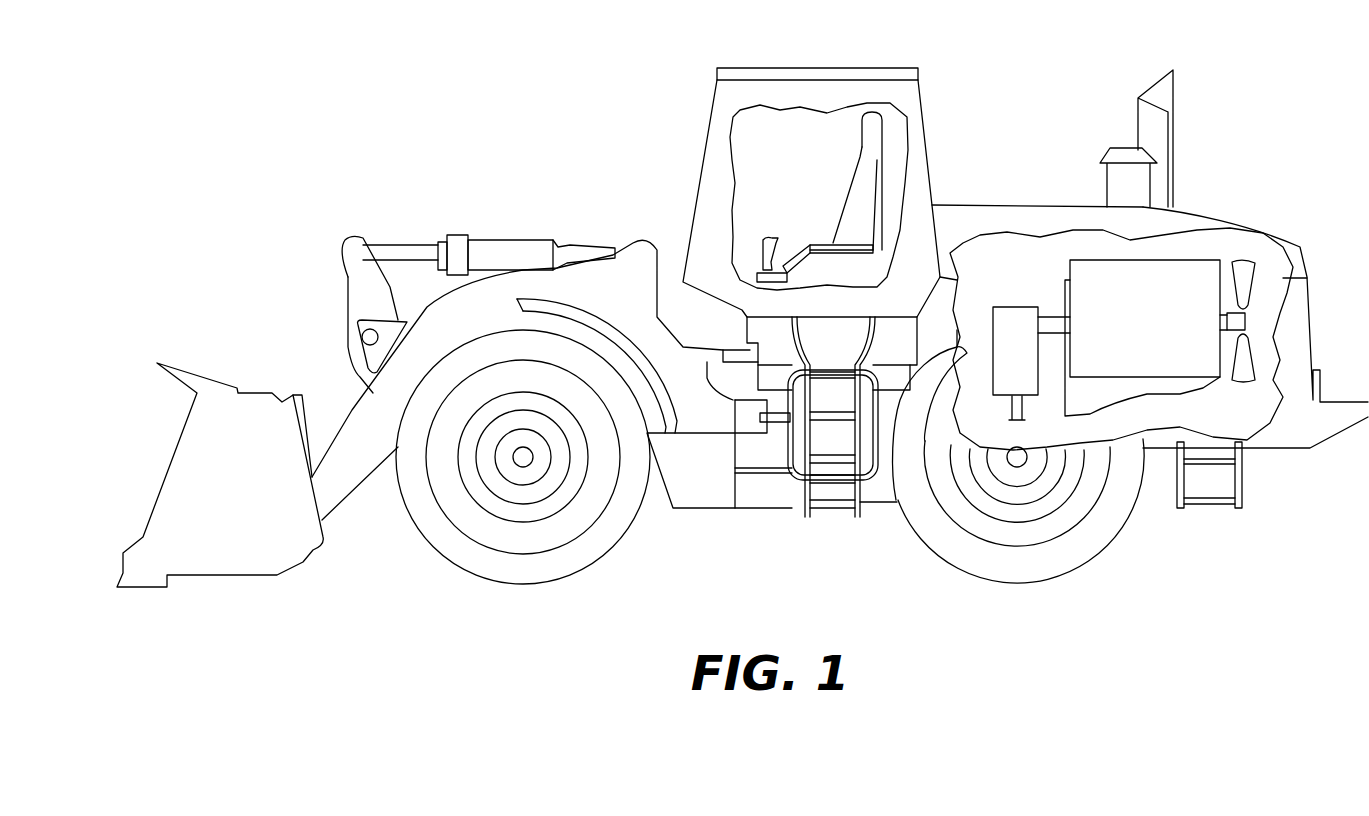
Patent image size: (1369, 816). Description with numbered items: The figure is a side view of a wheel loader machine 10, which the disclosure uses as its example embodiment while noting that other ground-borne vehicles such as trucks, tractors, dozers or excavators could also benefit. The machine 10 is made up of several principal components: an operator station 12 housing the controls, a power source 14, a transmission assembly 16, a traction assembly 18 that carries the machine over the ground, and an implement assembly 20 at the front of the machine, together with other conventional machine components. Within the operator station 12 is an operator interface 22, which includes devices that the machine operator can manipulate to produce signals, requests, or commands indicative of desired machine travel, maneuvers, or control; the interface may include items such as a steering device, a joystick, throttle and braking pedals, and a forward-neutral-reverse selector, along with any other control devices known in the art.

The wheel loader machine 10 is at (488, 135).
The operator station 12 is at (795, 123).
The power source 14 is at (1070, 270).
The transmission assembly 16 is at (1007, 387).
The traction assembly 18 is at (1090, 540).
The implement assembly 20 is at (303, 563).
The operator interface 22 is at (745, 247).